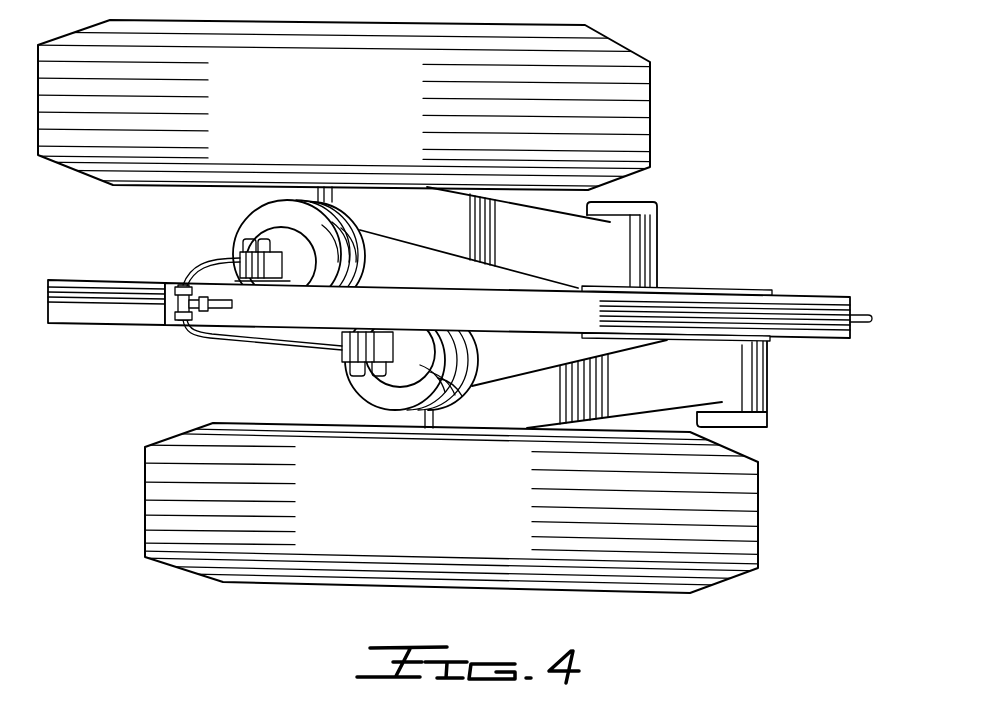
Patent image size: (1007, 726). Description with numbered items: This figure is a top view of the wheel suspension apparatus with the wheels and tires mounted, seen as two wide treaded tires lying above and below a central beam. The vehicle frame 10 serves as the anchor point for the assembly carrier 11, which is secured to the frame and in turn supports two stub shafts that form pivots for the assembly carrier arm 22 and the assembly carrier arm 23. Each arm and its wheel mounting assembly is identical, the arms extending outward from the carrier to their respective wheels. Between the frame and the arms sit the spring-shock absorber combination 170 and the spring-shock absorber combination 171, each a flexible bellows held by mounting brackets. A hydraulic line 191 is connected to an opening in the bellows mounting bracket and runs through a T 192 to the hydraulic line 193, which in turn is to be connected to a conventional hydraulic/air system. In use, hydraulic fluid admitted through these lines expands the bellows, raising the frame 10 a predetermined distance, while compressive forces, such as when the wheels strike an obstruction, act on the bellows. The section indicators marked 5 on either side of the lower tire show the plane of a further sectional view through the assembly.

The vehicle frame 10 is at (85, 323).
The assembly carrier 11 is at (697, 285).
The assembly carrier arm 22 is at (436, 256).
The assembly carrier arm 23 is at (498, 383).
The spring-shock absorber combination 170 is at (241, 223).
The spring-shock absorber combination 171 is at (348, 384).
The hydraulic line 191 is at (268, 345).
The T 192 is at (182, 283).
The hydraulic line 193 is at (228, 307).
The section line 5- 5 is at (337, 433).